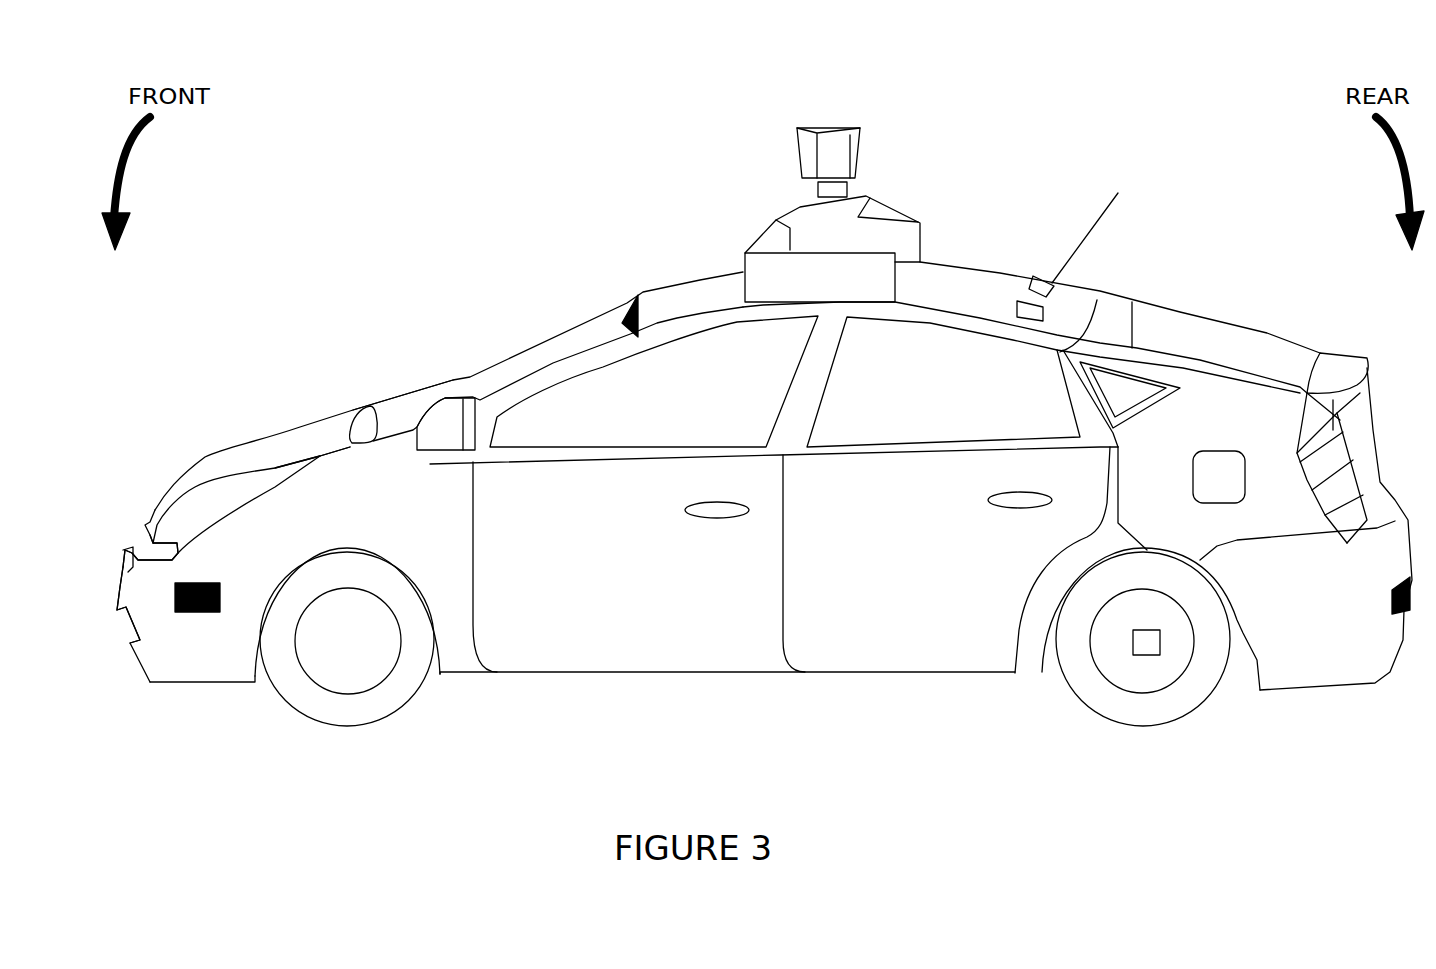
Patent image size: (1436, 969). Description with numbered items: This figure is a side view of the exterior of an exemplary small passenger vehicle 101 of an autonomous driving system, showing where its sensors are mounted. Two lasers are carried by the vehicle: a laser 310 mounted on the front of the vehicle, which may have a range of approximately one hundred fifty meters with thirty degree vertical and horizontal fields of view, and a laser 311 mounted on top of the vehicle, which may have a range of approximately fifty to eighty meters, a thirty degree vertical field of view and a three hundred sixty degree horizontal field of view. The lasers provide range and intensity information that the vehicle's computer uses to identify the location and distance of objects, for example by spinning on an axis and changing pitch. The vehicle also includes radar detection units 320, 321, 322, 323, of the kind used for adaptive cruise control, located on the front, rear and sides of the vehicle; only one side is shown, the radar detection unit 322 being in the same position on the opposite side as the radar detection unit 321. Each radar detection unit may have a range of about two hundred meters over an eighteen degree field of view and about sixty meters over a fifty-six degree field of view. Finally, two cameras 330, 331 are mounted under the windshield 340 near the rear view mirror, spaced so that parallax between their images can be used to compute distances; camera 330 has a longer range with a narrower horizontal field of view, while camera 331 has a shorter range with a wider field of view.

The vehicle 101 is at (415, 70).
The laser 310 is at (118, 567).
The laser 311 is at (803, 143).
The radar detection unit 320 is at (138, 636).
The radar detection unit 321 is at (200, 612).
The radar detection unit 322 is at (197, 597).
The radar detection unit 323 is at (1407, 613).
The camera 330 is at (622, 323).
The camera 331 is at (630, 316).
The windshield 340 is at (542, 357).